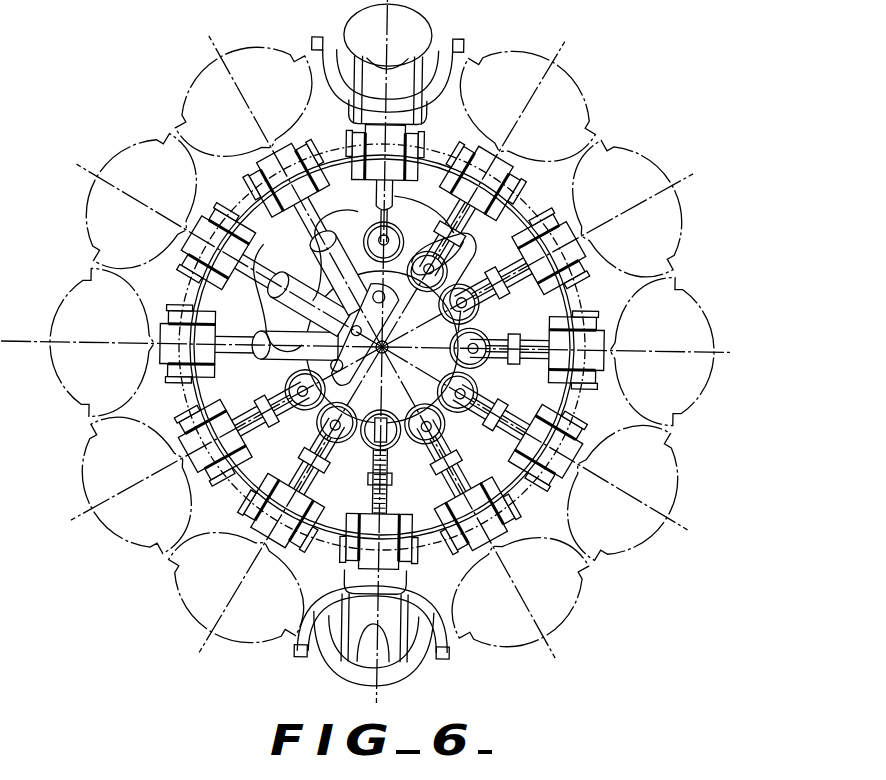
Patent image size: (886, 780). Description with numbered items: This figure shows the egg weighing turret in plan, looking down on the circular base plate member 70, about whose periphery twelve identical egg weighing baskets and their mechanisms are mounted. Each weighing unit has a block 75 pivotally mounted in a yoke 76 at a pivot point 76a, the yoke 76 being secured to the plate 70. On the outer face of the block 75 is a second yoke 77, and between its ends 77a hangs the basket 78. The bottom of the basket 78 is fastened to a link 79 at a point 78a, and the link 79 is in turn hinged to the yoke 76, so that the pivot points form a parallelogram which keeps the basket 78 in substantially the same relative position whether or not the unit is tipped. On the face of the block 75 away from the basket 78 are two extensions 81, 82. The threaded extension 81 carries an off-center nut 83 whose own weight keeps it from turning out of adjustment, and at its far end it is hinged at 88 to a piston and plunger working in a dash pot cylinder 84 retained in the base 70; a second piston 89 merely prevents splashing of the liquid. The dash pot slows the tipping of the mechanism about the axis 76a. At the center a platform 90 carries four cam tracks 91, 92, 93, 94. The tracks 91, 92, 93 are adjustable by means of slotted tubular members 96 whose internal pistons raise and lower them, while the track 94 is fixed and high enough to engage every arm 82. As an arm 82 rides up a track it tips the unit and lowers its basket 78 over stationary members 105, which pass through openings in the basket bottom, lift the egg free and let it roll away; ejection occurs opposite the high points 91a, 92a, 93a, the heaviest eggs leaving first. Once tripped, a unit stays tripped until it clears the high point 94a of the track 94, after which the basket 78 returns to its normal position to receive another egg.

The circular base plate member 70 is at (382, 347).
The block 75 is at (388, 530).
The yoke 76 is at (380, 526).
The pivot point 76a is at (356, 559).
The second yoke 77 is at (405, 590).
The ends of second yoke 77a is at (304, 657).
The basket 78 is at (338, 672).
The basket attachment point 78a is at (378, 664).
The link 79 is at (414, 612).
The threaded extension 81 is at (374, 458).
The arm 82 is at (396, 440).
The nut 83 is at (325, 469).
The cylinder 84 is at (425, 417).
The hinge connection 88 is at (376, 422).
The second piston 89 is at (319, 422).
The platform 90 is at (499, 359).
The cam track 91 is at (259, 275).
The highest point of cam track 91a is at (270, 258).
The cam track 92 is at (324, 255).
The high point of cam track 92a is at (346, 214).
The cam track 93 is at (372, 200).
The high point of cam track 93a is at (432, 210).
The cam track 94 is at (476, 254).
The high point of cam track 94a is at (462, 240).
The tubular members 96 is at (283, 330).
The stationary members 105 is at (335, 603).